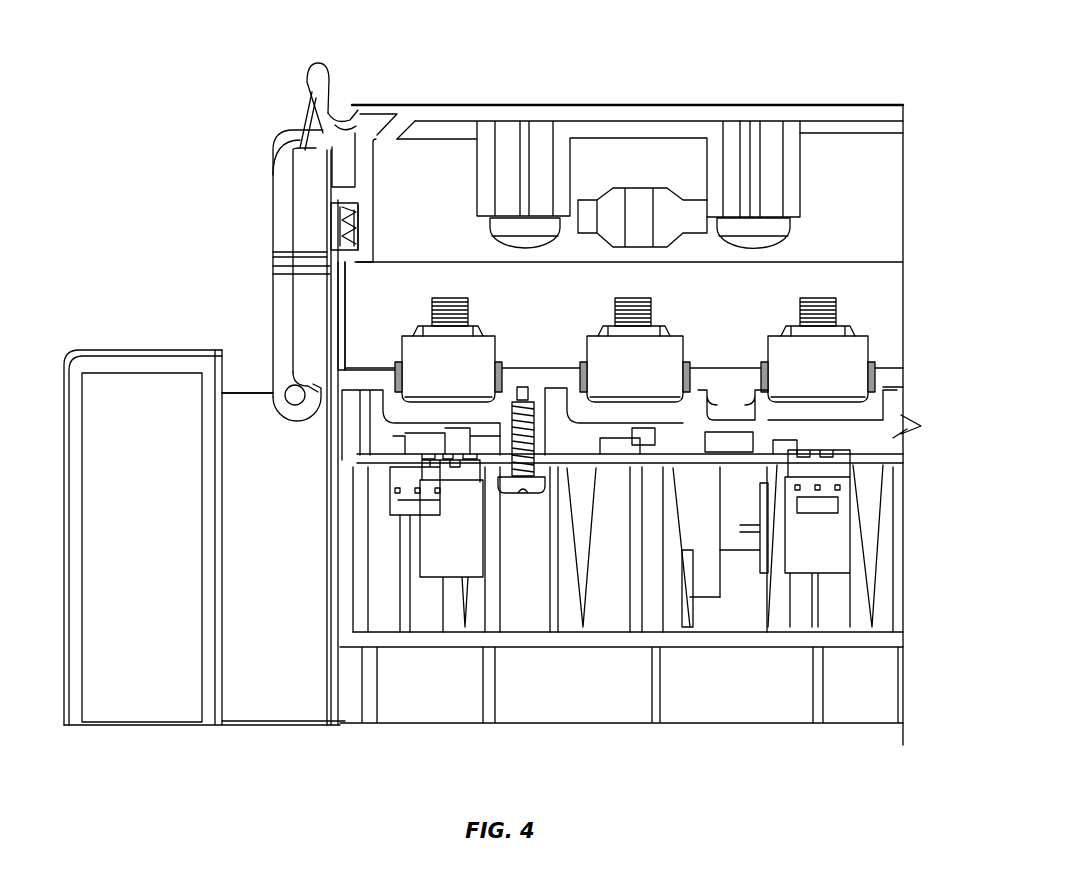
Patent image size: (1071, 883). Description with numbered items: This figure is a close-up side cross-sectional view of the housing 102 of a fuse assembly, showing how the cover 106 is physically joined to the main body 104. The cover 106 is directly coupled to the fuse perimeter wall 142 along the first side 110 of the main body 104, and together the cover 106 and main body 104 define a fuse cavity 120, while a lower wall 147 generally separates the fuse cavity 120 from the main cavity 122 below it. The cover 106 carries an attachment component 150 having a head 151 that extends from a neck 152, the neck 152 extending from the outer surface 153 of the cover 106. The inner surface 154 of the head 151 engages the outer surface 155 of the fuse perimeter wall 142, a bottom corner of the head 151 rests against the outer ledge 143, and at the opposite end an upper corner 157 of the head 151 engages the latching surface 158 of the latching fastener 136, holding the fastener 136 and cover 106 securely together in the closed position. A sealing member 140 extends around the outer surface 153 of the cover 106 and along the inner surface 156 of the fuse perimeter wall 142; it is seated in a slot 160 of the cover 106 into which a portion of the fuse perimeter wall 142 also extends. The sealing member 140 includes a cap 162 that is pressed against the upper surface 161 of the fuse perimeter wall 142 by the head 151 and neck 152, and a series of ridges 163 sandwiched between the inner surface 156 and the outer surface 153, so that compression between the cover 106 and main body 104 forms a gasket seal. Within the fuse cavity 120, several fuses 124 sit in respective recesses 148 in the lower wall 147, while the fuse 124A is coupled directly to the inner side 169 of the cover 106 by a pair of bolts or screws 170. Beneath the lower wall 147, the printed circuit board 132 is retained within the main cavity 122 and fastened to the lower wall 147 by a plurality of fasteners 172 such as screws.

The housing 102 is at (112, 252).
The main body 104 is at (292, 685).
The cover 106 is at (573, 101).
The first side 110 is at (158, 338).
The fuse cavity 120 is at (862, 255).
The main cavity 122 is at (742, 598).
The fuses 124 is at (691, 335).
The fuse 124A is at (657, 186).
The printed circuit board 132 is at (356, 460).
The latching fastener 136 is at (312, 84).
The sealing member 140 is at (364, 220).
The fuse perimeter wall 142 is at (327, 345).
The outer ledge 143 is at (327, 272).
The lower wall 147 is at (524, 385).
The recesses 148 is at (627, 391).
The attachment component 150 is at (298, 225).
The head 151 is at (300, 152).
The neck 152 is at (347, 192).
The outer surface 153 is at (383, 136).
The inner surface 154 is at (300, 250).
The outer surface 155 is at (325, 327).
The inner surface 156 is at (343, 307).
The upper corner 157 is at (312, 120).
The latching surface 158 is at (343, 118).
The slot 160 is at (354, 265).
The upper surface 161 is at (335, 222).
The cap 162 is at (333, 205).
The ridges 163 is at (357, 237).
The inner side 169 is at (878, 128).
The bolts or screws 170 is at (763, 222).
The fasteners 172 is at (518, 495).